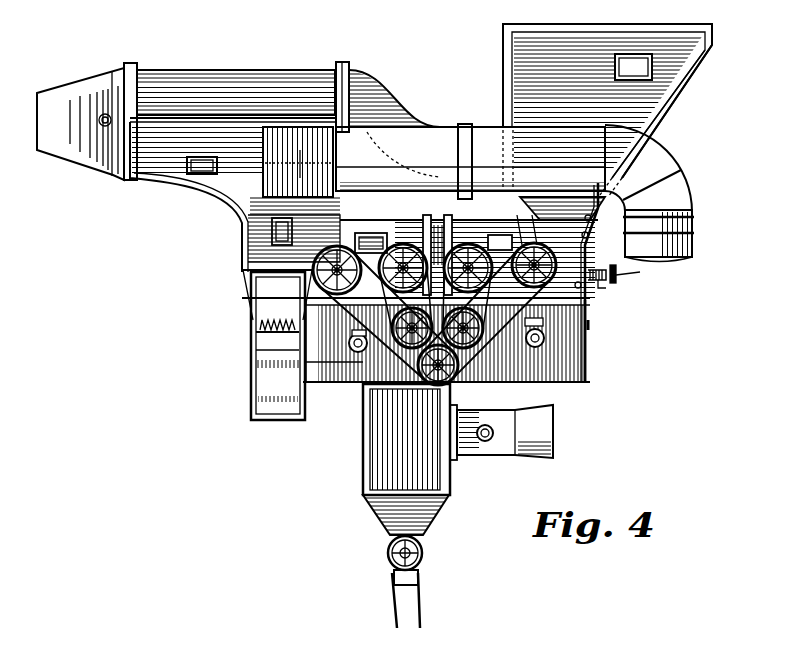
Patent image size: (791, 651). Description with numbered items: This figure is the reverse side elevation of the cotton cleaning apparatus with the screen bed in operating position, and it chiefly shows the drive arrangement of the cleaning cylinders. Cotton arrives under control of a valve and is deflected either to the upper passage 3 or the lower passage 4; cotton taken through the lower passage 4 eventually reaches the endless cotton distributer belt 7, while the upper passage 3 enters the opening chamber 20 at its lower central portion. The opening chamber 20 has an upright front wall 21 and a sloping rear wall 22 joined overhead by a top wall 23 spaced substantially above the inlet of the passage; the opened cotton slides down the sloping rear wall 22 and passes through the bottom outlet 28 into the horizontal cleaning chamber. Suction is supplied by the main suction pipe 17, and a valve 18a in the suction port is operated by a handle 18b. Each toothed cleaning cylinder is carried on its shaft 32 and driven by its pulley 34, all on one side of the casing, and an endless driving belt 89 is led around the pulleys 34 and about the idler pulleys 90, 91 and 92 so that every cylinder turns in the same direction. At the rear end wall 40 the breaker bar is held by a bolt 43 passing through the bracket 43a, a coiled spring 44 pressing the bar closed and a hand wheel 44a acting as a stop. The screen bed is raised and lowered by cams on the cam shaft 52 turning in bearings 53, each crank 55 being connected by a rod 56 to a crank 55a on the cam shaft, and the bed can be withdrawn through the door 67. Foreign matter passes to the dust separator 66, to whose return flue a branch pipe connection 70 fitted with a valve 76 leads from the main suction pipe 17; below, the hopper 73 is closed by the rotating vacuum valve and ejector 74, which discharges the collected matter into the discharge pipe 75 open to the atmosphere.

The upper passage 3 is at (111, 74).
The lower passage 4 is at (116, 176).
The endless cotton distributer belt 7 is at (256, 330).
The main suction pipe 17 is at (695, 252).
The valve 18a is at (333, 156).
The handle 18b is at (224, 206).
The opening chamber 20 is at (589, 100).
The upright front wall 21 is at (503, 98).
The sloping rear wall 22 is at (678, 107).
The top wall 23 is at (628, 25).
The bottom outlet 28 is at (475, 224).
The shaft 32 is at (423, 240).
The pulley 34 is at (395, 240).
The rear end wall 40 is at (588, 260).
The bolt 43 is at (617, 275).
The bracket 43a is at (608, 286).
The coiled spring 44 is at (600, 270).
The hand wheel 44a is at (618, 280).
The cam shaft 52 is at (350, 352).
The bearings 53 is at (358, 350).
The crank 55 is at (552, 345).
The crank 55a is at (395, 345).
The rod 56 is at (520, 350).
The dust separator 66 is at (382, 437).
The door 67 is at (590, 335).
The branch pipe connection 70 is at (528, 458).
The hopper 73 is at (440, 517).
The rotating vacuum valve and ejector 74 is at (423, 556).
The discharge pipe 75 is at (418, 578).
The valve 76 is at (490, 425).
The endless driving belt 89 is at (320, 292).
The idler pulley 90 is at (470, 348).
The idler pulley 91 is at (427, 366).
The idler pulley 92 is at (532, 348).